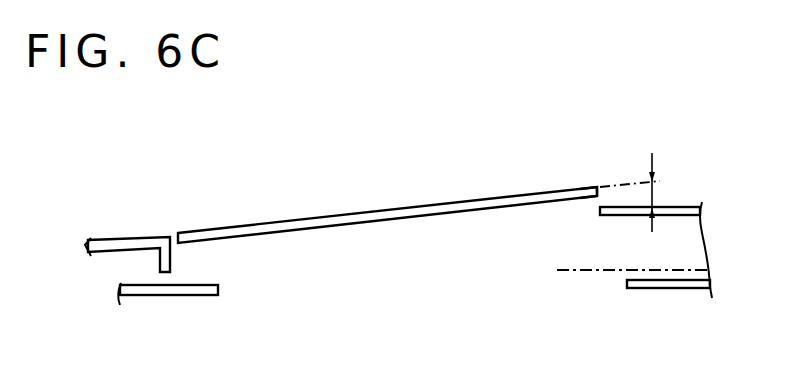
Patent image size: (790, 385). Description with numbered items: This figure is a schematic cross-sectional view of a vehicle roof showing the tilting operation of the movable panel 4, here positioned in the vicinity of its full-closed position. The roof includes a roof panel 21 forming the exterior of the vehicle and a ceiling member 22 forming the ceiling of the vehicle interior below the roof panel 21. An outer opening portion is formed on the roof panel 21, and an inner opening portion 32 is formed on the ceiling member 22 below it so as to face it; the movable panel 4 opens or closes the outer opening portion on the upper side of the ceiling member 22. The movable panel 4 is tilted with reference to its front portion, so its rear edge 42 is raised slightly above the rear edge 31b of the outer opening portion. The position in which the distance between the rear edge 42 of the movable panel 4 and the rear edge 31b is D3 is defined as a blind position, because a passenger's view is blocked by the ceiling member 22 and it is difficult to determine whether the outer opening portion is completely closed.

The movable panel 4 is at (355, 218).
The roof panel 21 is at (113, 246).
The ceiling member 22 is at (178, 294).
The rear edge of the outer opening portion 31b is at (600, 210).
The inner opening portion 32 is at (627, 283).
The rear edge of the movable panel 42 is at (592, 185).
The distance D3 is at (669, 188).